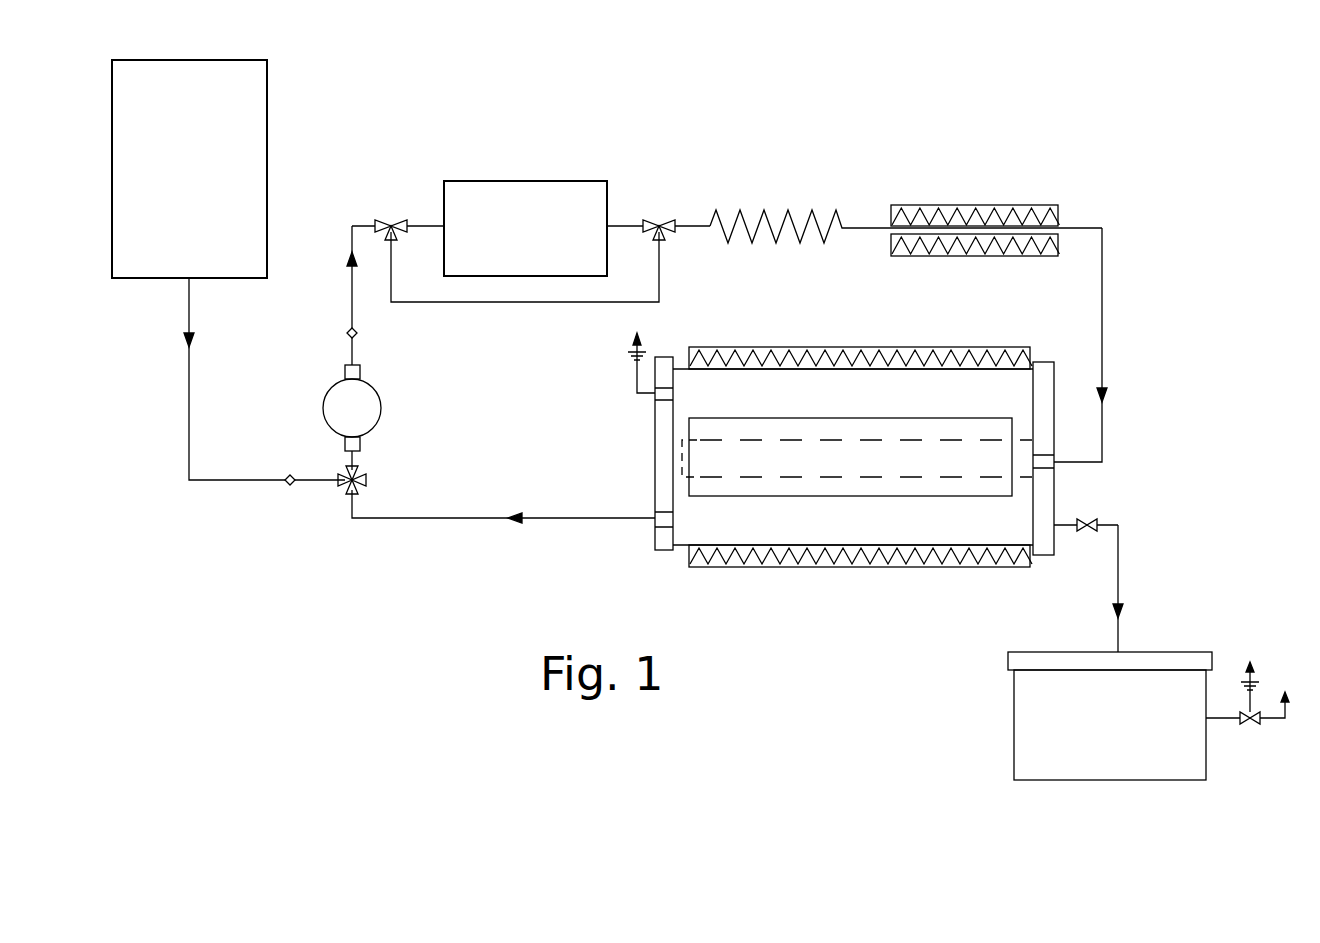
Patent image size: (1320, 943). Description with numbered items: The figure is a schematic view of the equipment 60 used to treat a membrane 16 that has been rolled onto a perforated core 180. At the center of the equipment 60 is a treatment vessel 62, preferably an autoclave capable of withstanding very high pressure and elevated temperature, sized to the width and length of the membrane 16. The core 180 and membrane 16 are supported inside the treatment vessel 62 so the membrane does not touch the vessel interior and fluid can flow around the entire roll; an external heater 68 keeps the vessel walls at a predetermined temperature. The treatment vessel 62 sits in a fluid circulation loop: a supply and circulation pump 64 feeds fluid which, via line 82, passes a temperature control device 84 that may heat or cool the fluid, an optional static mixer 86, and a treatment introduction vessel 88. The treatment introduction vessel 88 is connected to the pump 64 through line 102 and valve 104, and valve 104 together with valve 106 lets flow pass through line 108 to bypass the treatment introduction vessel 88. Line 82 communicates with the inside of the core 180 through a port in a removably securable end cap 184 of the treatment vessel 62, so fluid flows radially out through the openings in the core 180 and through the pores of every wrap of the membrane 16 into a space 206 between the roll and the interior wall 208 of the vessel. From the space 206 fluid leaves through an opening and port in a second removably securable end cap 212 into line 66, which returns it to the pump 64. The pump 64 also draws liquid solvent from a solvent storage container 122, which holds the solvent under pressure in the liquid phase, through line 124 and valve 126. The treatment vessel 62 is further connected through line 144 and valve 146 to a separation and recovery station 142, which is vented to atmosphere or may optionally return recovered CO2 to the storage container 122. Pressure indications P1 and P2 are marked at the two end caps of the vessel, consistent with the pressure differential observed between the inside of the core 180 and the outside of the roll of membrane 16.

The equipment 60 is at (1172, 238).
The treatment vessel 62 is at (646, 559).
The supply and circulation pump 64 is at (381, 405).
The line 66 is at (590, 518).
The external heater 68 is at (770, 347).
The line 82 is at (1102, 345).
The temperature control device 84 is at (1000, 205).
The static mixer 86 is at (790, 212).
The treatment introduction vessel 88 is at (533, 181).
The line 102 is at (351, 296).
The valve 104 is at (392, 218).
The valve 106 is at (661, 216).
The line 108 is at (547, 302).
The solvent storage container 122 is at (268, 160).
The line 124 is at (189, 415).
The valve 126 is at (360, 477).
The separation and recovery station 142 is at (1132, 722).
The line 144 is at (1118, 577).
The valve 146 is at (1085, 532).
The membrane 16 is at (750, 496).
The core 180 is at (790, 440).
The end cap 184 is at (1046, 375).
The space 206 is at (989, 530).
The interior wall 208 is at (718, 545).
The second end cap 212 is at (655, 445).
The pressure sensor P1 is at (673, 519).
The pressure sensor P2 is at (1040, 462).